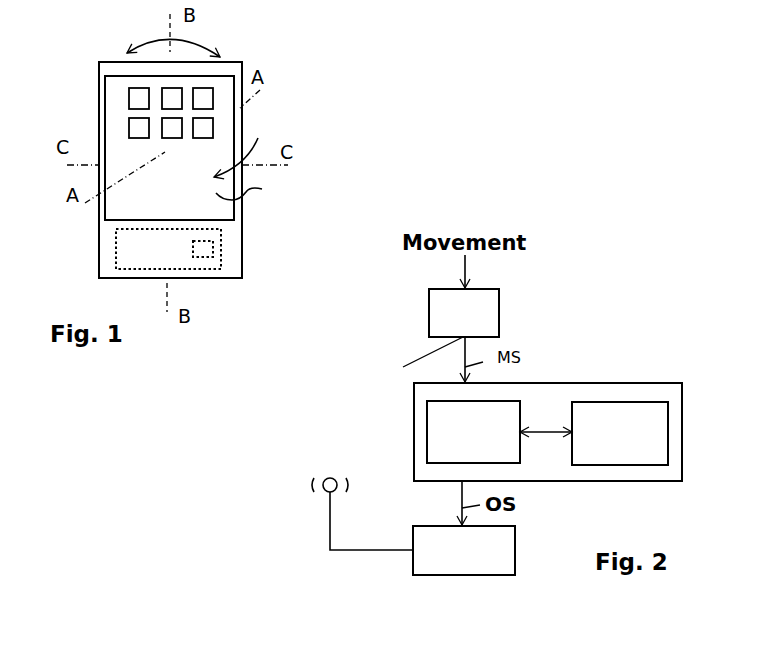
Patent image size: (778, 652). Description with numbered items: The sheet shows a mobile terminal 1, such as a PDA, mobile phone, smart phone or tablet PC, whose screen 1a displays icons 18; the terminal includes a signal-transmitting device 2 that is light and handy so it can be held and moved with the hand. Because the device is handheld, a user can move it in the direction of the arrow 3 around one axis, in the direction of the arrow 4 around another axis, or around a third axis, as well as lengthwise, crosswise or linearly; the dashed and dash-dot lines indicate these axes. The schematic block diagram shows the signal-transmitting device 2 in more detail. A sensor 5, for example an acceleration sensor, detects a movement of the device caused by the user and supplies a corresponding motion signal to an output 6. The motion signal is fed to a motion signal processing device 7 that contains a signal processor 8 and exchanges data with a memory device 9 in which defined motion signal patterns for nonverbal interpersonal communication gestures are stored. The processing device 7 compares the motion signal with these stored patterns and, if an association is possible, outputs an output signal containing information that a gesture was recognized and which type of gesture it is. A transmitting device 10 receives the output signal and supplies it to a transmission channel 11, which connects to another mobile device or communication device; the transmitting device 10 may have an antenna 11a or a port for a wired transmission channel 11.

In FIG. 1, the mobile terminal 1 is at (86, 78).
In FIG. 1, the screen 1a is at (254, 194).
In FIG. 1, the signal-transmitting device 2 is at (222, 245).
In FIG. 2, the signal-transmitting device 2 is at (581, 286).
In FIG. 1, the arrow 3 is at (144, 41).
In FIG. 1, the arrow 4 is at (242, 147).
In FIG. 1, the sensor 5 is at (208, 252).
In FIG. 2, the sensor 5 is at (497, 318).
In FIG. 2, the output 6 is at (421, 360).
In FIG. 2, the motion signal processing device 7 is at (570, 383).
In FIG. 2, the signal processor 8 is at (438, 422).
In FIG. 2, the memory device 9 is at (642, 415).
In FIG. 2, the transmitting device 10 is at (508, 540).
In FIG. 2, the transmission channel 11 is at (380, 548).
In FIG. 2, the antenna 11a is at (321, 476).
In FIG. 1, the icons 18 is at (136, 97).